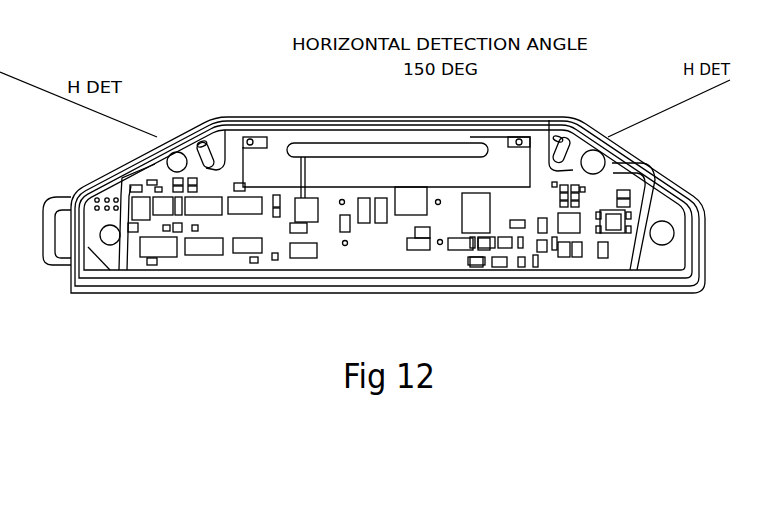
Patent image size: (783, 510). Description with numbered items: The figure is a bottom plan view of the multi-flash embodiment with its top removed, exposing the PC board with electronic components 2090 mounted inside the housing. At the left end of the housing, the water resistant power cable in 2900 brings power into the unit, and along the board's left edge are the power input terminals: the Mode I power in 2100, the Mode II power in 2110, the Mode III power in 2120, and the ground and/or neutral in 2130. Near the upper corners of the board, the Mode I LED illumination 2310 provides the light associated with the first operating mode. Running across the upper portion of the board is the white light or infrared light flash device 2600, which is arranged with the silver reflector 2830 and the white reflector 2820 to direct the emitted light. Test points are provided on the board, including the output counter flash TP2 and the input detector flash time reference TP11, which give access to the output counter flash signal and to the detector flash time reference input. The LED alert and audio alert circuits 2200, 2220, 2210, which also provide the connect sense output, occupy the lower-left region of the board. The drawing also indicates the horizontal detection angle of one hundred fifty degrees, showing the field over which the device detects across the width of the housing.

The water resistant power cable in 2900 is at (55, 207).
The Mode I LED illumination 2310 is at (205, 143).
The output counter flash TP2 is at (302, 152).
The input detector flash time reference TP11 is at (598, 212).
The Mode I power in 2100 is at (97, 202).
The Mode II power in 2110 is at (100, 212).
The Mode III power in 2120 is at (107, 211).
The ground and/or neutral in 2130 is at (117, 212).
The LED alert and audio alert circuit 2200 is at (192, 210).
The LED alert and audio alert circuit 2210 is at (208, 248).
The LED alert and audio alert circuit 2220 is at (248, 205).
The white light or infrared light flash device 2600 is at (342, 153).
The PC board with electronic components 2090 is at (387, 258).
The silver reflector 2830 is at (463, 173).
The white reflector 2820 is at (517, 203).